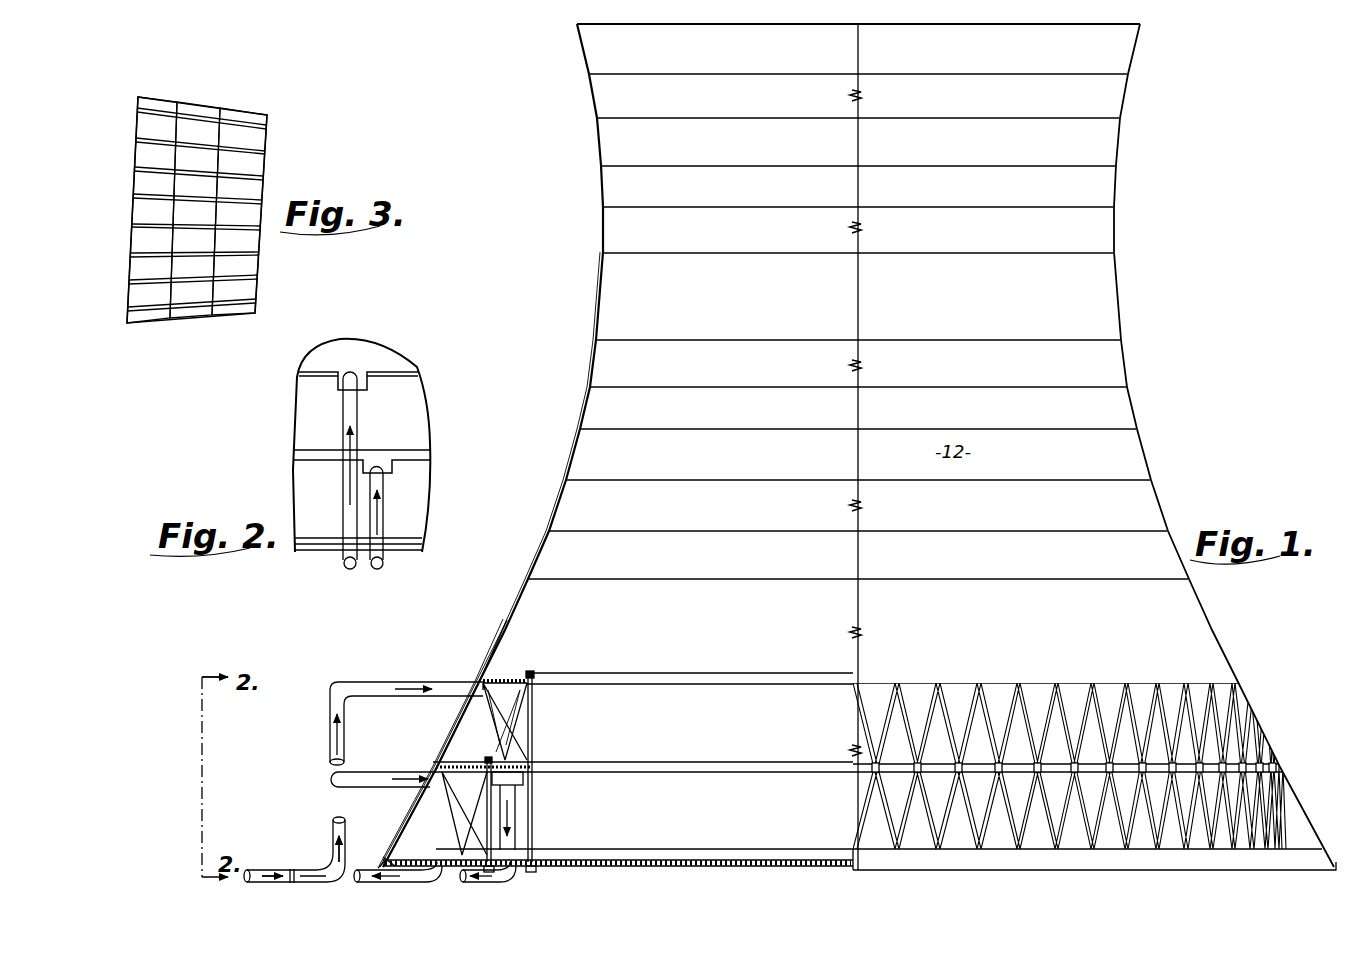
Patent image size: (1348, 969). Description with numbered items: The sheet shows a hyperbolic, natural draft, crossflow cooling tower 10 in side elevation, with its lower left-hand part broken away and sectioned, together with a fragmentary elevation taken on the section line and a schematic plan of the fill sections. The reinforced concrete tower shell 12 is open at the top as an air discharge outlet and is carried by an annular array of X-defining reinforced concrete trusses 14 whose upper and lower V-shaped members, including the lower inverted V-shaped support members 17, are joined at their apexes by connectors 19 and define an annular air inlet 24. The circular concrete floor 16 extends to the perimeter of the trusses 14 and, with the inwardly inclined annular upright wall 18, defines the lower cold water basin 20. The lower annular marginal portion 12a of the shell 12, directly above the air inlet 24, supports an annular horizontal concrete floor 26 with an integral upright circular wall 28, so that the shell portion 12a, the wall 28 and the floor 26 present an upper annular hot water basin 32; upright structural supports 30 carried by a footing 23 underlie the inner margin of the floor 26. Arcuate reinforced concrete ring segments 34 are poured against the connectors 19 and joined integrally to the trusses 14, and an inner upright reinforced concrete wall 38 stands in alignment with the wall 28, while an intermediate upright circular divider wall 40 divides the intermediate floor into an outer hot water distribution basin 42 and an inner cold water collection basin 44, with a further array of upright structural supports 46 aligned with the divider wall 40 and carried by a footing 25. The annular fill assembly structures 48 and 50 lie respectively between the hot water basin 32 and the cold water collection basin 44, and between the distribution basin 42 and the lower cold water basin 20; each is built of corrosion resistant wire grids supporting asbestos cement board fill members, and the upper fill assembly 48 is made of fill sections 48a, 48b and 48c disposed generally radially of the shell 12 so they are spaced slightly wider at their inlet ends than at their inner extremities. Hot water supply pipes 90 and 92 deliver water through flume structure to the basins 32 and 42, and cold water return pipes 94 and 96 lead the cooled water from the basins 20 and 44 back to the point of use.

In FIG. 1, the cooling tower 10 is at (1124, 271).
In FIG. 2, the cooling tower 10 is at (366, 338).
In FIG. 1, the tower shell 12 is at (600, 244).
In FIG. 1, the lower annular marginal portion of shell 12a is at (483, 677).
In FIG. 2, the lower annular marginal portion of shell 12a is at (405, 368).
In FIG. 1, the X-defining reinforced concrete trusses 14 is at (1014, 682).
In FIG. 1, the circular concrete floor 16 is at (698, 866).
In FIG. 1, the lower inverted V-shaped support members 17 is at (960, 833).
In FIG. 1, the annular upright wall 18 is at (393, 860).
In FIG. 1, the connectors 19 is at (872, 762).
In FIG. 1, the lower cold water basin 20 is at (668, 848).
In FIG. 1, the footing 23 is at (518, 874).
In FIG. 1, the annular air inlet 24 is at (910, 692).
In FIG. 1, the footing 25 is at (952, 697).
In FIG. 1, the annular horizontal concrete floor 26 is at (505, 680).
In FIG. 1, the upright circular wall 28 is at (570, 675).
In FIG. 1, the upright structural supports 30 is at (534, 718).
In FIG. 1, the upper annular hot water basin 32 is at (532, 670).
In FIG. 1, the reinforced concrete ring segments 34 is at (893, 775).
In FIG. 2, the reinforced concrete ring segments 34 is at (420, 455).
In FIG. 1, the inner upright reinforced concrete wall 38 is at (536, 762).
In FIG. 1, the intermediate upright circular divider wall 40 is at (488, 760).
In FIG. 1, the outer hot water distribution basin 42 is at (456, 765).
In FIG. 1, the inner cold water collection basin 44 is at (516, 772).
In FIG. 1, the upright structural supports 46 is at (517, 812).
In FIG. 1, the upper fill assembly structure 48 is at (522, 710).
In FIG. 3, the upper fill assembly structure 48 is at (186, 189).
In FIG. 3, the fill section 48a is at (150, 96).
In FIG. 3, the fill section 48b is at (202, 102).
In FIG. 3, the fill section 48c is at (252, 109).
In FIG. 1, the lower fill assembly structure 50 is at (448, 802).
In FIG. 1, the hot water supply pipe 90 is at (372, 682).
In FIG. 2, the hot water supply pipe 90 is at (358, 414).
In FIG. 1, the hot water supply pipe 92 is at (333, 840).
In FIG. 2, the hot water supply pipe 92 is at (386, 522).
In FIG. 1, the cold water return pipe 94 is at (372, 868).
In FIG. 1, the cold water return pipe 96 is at (520, 830).